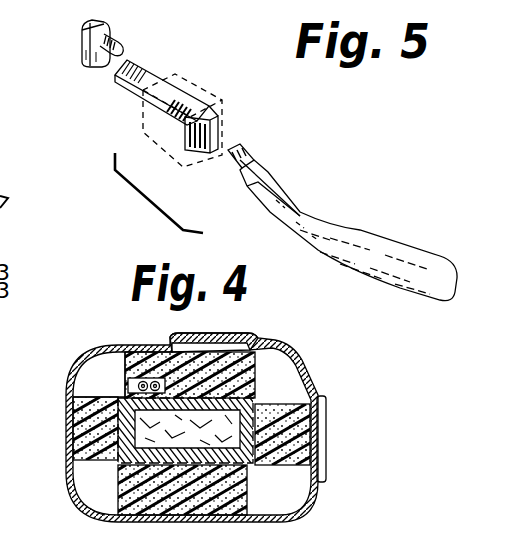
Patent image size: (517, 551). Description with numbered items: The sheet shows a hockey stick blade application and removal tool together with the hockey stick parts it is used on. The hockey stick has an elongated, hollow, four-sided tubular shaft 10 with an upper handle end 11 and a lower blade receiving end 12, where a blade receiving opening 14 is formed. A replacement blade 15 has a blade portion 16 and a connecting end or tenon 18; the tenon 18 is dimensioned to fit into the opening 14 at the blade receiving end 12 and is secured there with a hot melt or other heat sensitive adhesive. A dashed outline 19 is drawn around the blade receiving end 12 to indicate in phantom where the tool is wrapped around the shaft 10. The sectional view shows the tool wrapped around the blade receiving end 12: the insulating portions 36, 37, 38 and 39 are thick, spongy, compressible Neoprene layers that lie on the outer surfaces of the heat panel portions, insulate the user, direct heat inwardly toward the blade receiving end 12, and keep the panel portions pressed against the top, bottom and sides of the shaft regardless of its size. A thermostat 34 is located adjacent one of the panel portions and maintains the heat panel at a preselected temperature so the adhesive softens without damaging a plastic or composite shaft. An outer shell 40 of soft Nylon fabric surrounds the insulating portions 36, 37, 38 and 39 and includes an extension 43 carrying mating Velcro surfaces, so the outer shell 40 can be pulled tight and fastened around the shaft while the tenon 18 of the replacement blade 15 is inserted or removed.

In FIG. 5, the shaft 10 is at (153, 72).
In FIG. 5, the upper handle end 11 is at (118, 47).
In FIG. 5, the blade receiving end 12 is at (207, 117).
In FIG. 4, the blade receiving end 12 is at (278, 404).
In FIG. 5, the blade receiving opening 14 is at (203, 157).
In FIG. 5, the replacement blade 15 is at (270, 180).
In FIG. 5, the blade portion 16 is at (393, 248).
In FIG. 5, the tenon 18 is at (238, 157).
In FIG. 4, the tenon 18 is at (265, 467).
In FIG. 5, the housing outline 19 is at (222, 86).
In FIG. 4, the thermostat 34 is at (123, 390).
In FIG. 4, the insulating portion 36 is at (197, 316).
In FIG. 4, the insulating portion 37 is at (83, 472).
In FIG. 4, the insulating portion 38 is at (97, 514).
In FIG. 4, the insulating portion 39 is at (326, 433).
In FIG. 4, the outer shell 40 is at (125, 380).
In FIG. 4, the extension 43 is at (300, 365).